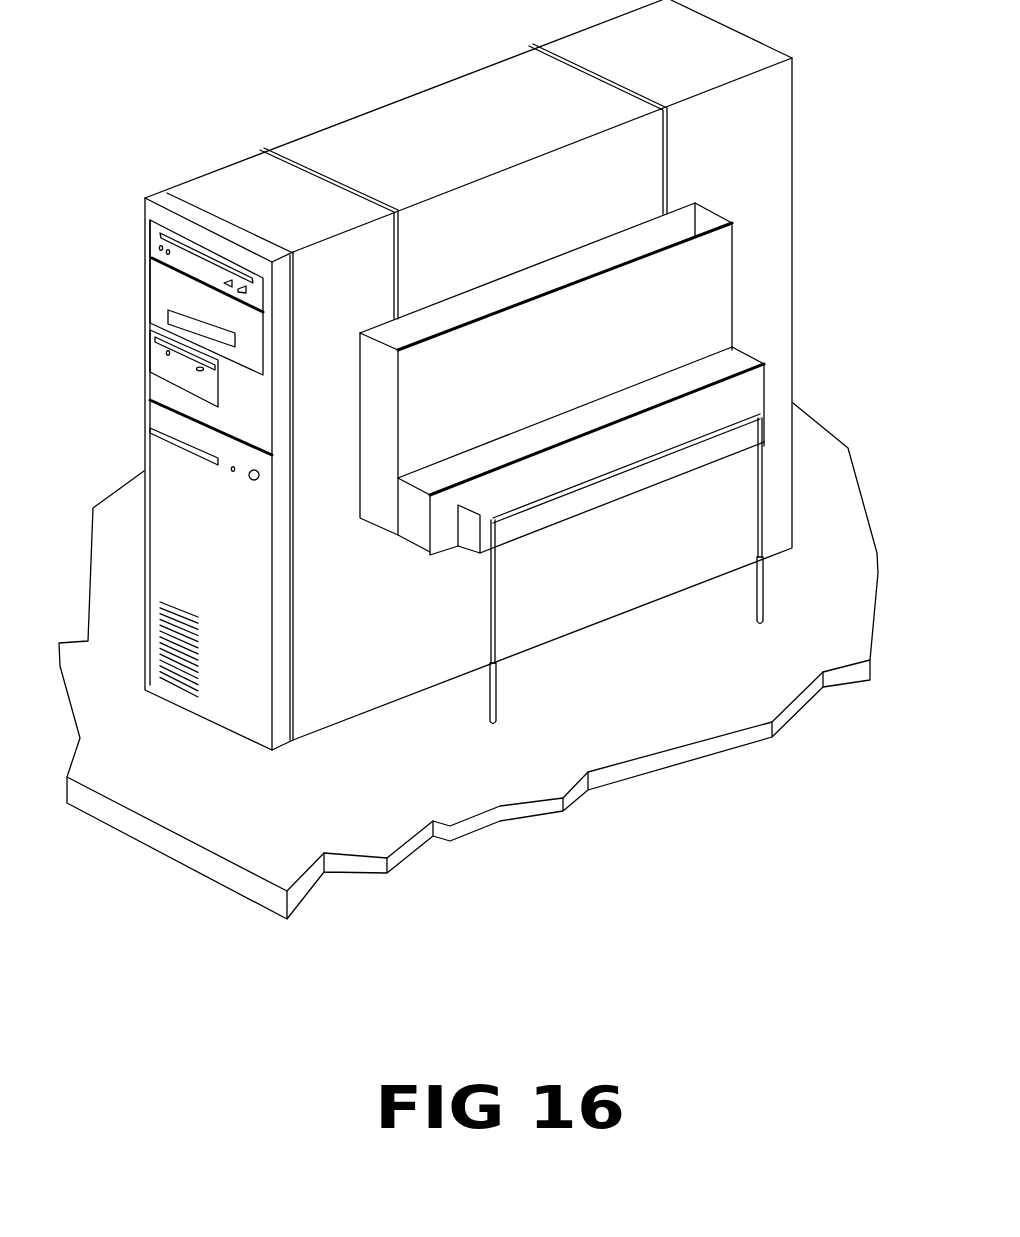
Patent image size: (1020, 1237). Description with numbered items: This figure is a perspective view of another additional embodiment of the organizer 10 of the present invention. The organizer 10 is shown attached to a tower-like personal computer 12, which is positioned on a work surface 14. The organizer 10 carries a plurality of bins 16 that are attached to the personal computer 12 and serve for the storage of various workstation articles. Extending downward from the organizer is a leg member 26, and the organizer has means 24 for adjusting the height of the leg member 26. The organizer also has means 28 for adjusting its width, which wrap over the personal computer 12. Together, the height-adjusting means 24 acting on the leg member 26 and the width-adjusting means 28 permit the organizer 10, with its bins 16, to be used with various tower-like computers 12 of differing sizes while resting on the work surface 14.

The organizer 10 is at (520, 375).
The personal computer 12 is at (777, 95).
The work surface 14 is at (821, 463).
The bins 16 is at (612, 423).
The means for adjusting the height 24 is at (496, 687).
The leg member 26 is at (496, 604).
The means for adjusting the width 28 is at (315, 180).